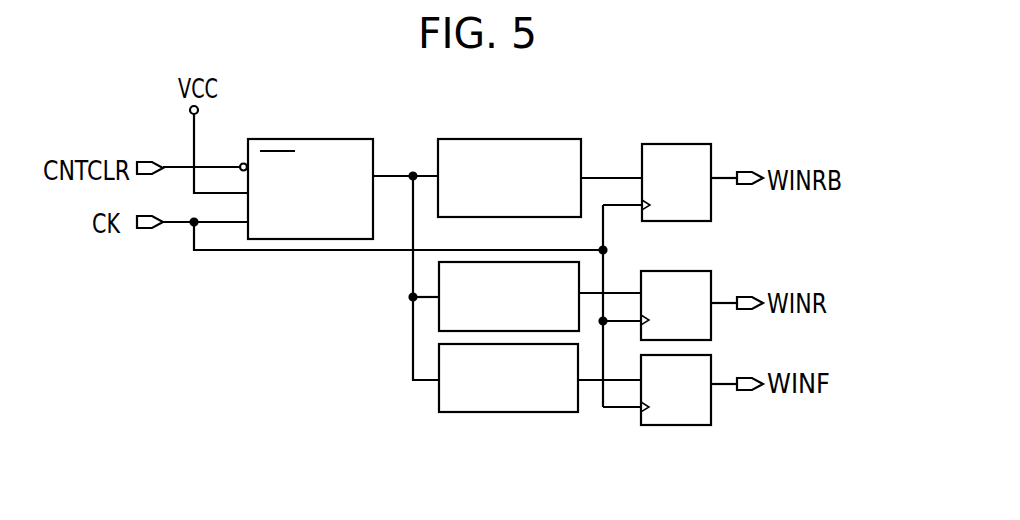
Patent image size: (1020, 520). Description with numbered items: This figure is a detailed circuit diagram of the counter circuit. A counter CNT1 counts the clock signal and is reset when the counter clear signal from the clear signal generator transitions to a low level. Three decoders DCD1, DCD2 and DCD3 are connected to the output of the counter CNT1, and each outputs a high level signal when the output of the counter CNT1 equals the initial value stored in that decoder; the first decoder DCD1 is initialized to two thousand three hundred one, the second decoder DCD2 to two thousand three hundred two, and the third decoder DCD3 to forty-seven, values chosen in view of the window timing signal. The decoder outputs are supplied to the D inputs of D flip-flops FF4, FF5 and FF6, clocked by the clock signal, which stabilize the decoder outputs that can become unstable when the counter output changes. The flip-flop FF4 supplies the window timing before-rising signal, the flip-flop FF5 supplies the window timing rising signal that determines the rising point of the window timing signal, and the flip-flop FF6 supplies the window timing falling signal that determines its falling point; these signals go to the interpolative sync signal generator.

The counter CNT1 is at (345, 139).
The first decoder DCD1 is at (550, 139).
The second decoder DCD2 is at (439, 316).
The third decoder DCD3 is at (439, 403).
The D flip-flop FF4 is at (692, 144).
The D flip-flop FF5 is at (711, 279).
The D flip-flop FF6 is at (711, 373).